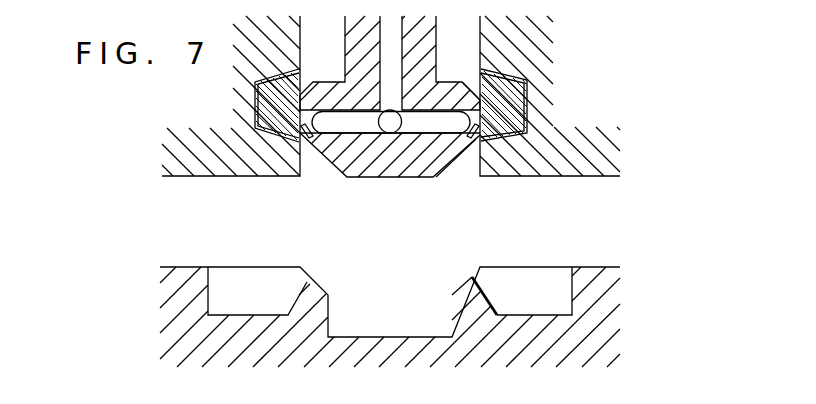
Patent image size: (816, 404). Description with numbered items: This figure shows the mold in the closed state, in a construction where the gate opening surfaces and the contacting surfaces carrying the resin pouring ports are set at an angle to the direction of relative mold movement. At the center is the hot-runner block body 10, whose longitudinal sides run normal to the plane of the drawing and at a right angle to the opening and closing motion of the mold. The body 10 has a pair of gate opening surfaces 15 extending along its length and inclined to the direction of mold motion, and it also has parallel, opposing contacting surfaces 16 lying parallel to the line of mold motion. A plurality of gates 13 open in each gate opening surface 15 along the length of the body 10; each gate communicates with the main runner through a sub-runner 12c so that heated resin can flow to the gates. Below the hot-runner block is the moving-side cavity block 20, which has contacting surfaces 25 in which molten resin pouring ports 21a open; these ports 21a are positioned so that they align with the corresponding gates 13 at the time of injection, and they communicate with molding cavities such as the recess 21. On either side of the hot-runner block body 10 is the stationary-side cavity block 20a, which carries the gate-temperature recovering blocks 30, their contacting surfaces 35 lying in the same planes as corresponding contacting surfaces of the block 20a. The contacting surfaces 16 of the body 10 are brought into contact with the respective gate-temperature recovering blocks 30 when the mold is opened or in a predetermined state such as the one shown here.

The hot-runner block body 10 is at (373, 167).
The sub-runner 12c is at (413, 127).
The gates 13 is at (307, 139).
The gate opening surfaces 15 is at (443, 171).
The contacting surfaces 16 is at (477, 100).
The moving-side cavity block 20 is at (605, 313).
The stationary-side cavity block 20a is at (587, 138).
The recess 21 is at (540, 278).
The molten resin pouring ports 21a is at (480, 278).
The contacting surfaces 25 is at (472, 275).
The gate-temperature recovering blocks 30 is at (513, 83).
The contacting surfaces 35 is at (490, 113).